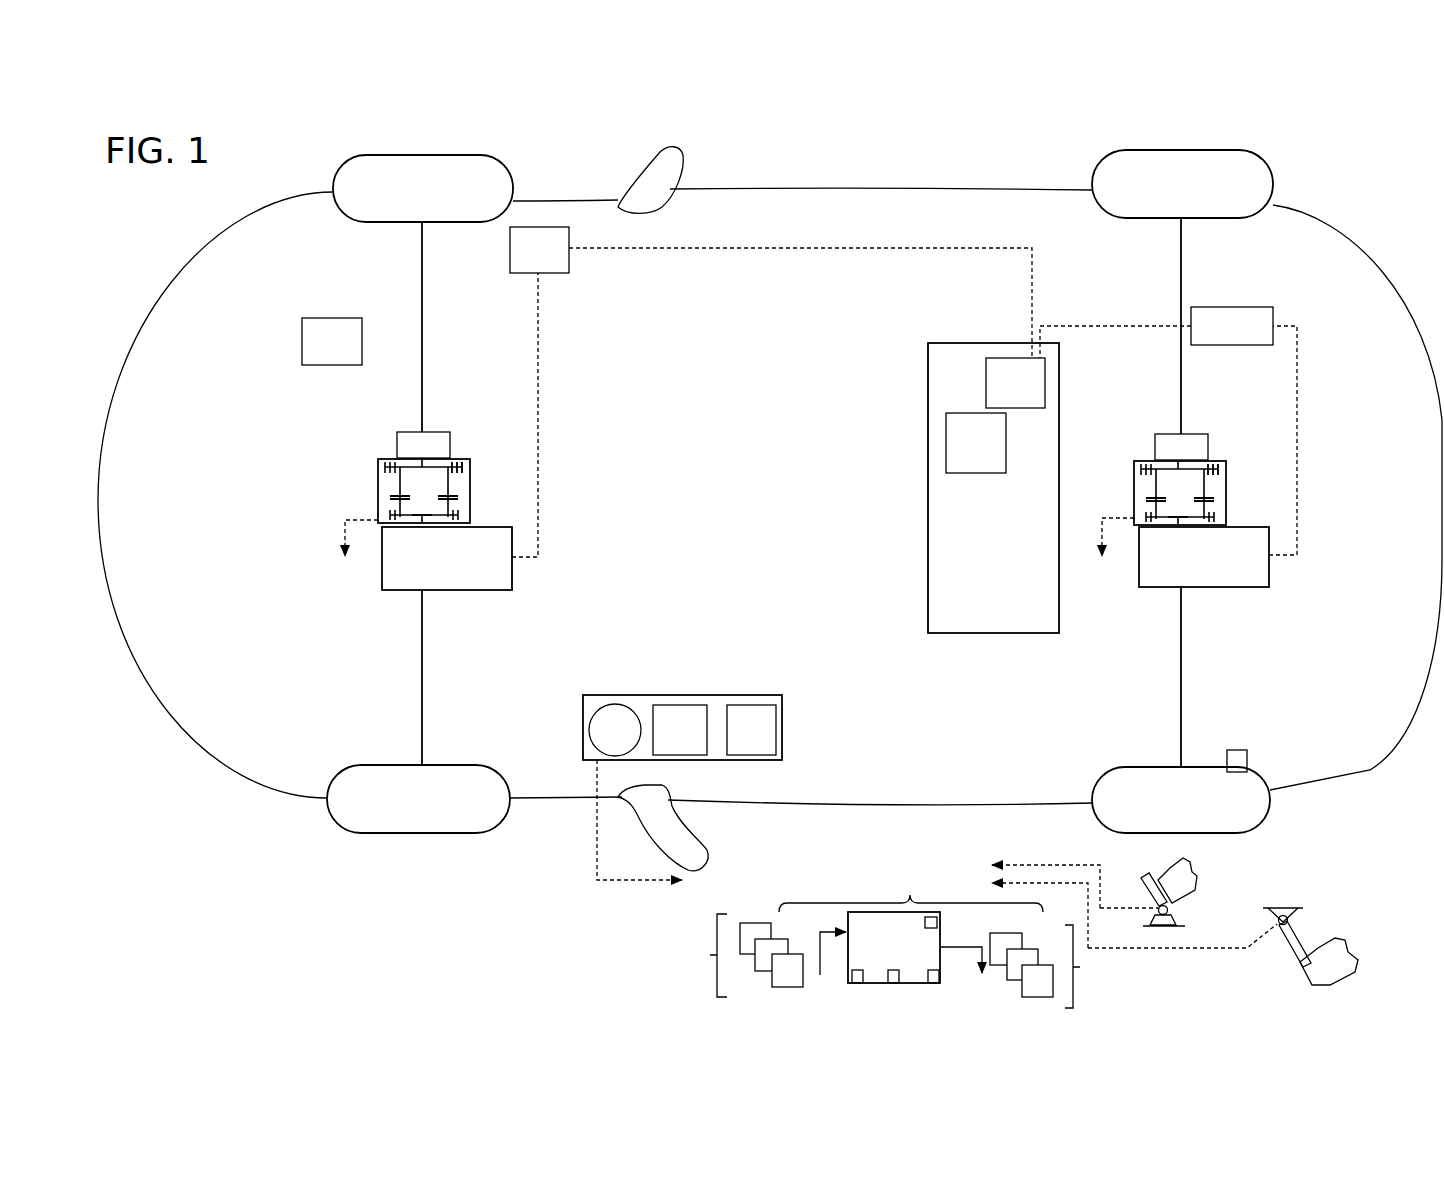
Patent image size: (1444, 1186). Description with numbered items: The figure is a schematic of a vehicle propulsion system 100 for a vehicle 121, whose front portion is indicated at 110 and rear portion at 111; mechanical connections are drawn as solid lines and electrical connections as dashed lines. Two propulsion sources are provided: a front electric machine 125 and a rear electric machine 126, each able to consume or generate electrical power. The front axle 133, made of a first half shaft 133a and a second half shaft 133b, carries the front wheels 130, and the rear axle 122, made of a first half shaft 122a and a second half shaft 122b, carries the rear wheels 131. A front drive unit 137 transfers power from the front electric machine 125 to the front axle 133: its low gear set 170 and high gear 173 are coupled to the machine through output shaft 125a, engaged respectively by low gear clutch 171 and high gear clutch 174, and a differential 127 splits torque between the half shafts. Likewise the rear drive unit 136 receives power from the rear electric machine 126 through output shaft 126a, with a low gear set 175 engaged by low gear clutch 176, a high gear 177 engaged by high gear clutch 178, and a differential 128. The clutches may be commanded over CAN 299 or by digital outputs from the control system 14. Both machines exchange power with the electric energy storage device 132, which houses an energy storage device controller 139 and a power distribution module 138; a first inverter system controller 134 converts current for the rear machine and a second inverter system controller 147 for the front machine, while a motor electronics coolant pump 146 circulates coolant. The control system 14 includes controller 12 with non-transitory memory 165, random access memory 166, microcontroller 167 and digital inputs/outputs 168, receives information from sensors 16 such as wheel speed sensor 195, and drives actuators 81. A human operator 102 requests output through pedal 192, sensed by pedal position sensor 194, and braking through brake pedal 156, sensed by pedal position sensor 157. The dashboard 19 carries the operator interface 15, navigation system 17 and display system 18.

The vehicle propulsion system 100 is at (914, 164).
The front portion of vehicle 110 is at (121, 291).
The rear portion of vehicle 111 is at (1406, 238).
The vehicle 121 is at (1390, 793).
The rear axle 122 is at (1234, 492).
The first half shaft 122a is at (1181, 272).
The second half shaft 122b is at (1181, 695).
The front electric machine 125 is at (447, 558).
The output shaft of front electric machine 125a is at (428, 518).
The rear electric machine 126 is at (1204, 557).
The output shaft of rear electric machine 126a is at (1184, 520).
The differential 127 is at (423, 445).
The differential 128 is at (1181, 447).
The front wheels 130 is at (440, 155).
The rear wheels 131 is at (1216, 150).
The electric energy storage device 132 is at (993, 488).
The front axle 133 is at (394, 493).
The first half shaft 133a is at (422, 330).
The second half shaft 133b is at (422, 655).
The first inverter system controller 134 is at (1156, 332).
The rear drive unit 136 is at (1301, 565).
The front drive unit 137 is at (541, 567).
The power distribution module 138 is at (1015, 383).
The electric energy storage device controller 139 is at (976, 443).
The motor electronics coolant pump 146 is at (332, 341).
The second inverter system controller 147 is at (771, 292).
The low gear set 170 is at (376, 476).
The low gear clutch 171 is at (392, 497).
The high gear 173 is at (462, 476).
The high gear clutch 174 is at (456, 497).
The low gear set 175 is at (1132, 478).
The low gear clutch 176 is at (1148, 500).
The high gear 177 is at (1219, 478).
The high gear clutch 178 is at (1214, 500).
The dashboard 19 is at (682, 767).
The operator interface 15 is at (615, 730).
The on-board navigation system 17 is at (714, 695).
The display system 18 is at (680, 730).
The control system 14 is at (910, 896).
The controller 12 is at (894, 947).
The sensors 16 is at (741, 955).
The actuators 81 is at (1050, 966).
The non-transitory memory 165 is at (858, 983).
The random access memory 166 is at (893, 983).
The microcontroller 167 is at (934, 983).
The digital inputs/outputs 168 is at (938, 923).
The pedal 192 is at (1150, 893).
The pedal position sensor 194 is at (1168, 910).
The wheel speed sensor 195 is at (1240, 750).
The human operator 102 is at (1179, 880).
The brake pedal 156 is at (1305, 968).
The pedal position sensor 157 is at (1273, 927).
The CAN 299 is at (362, 522).